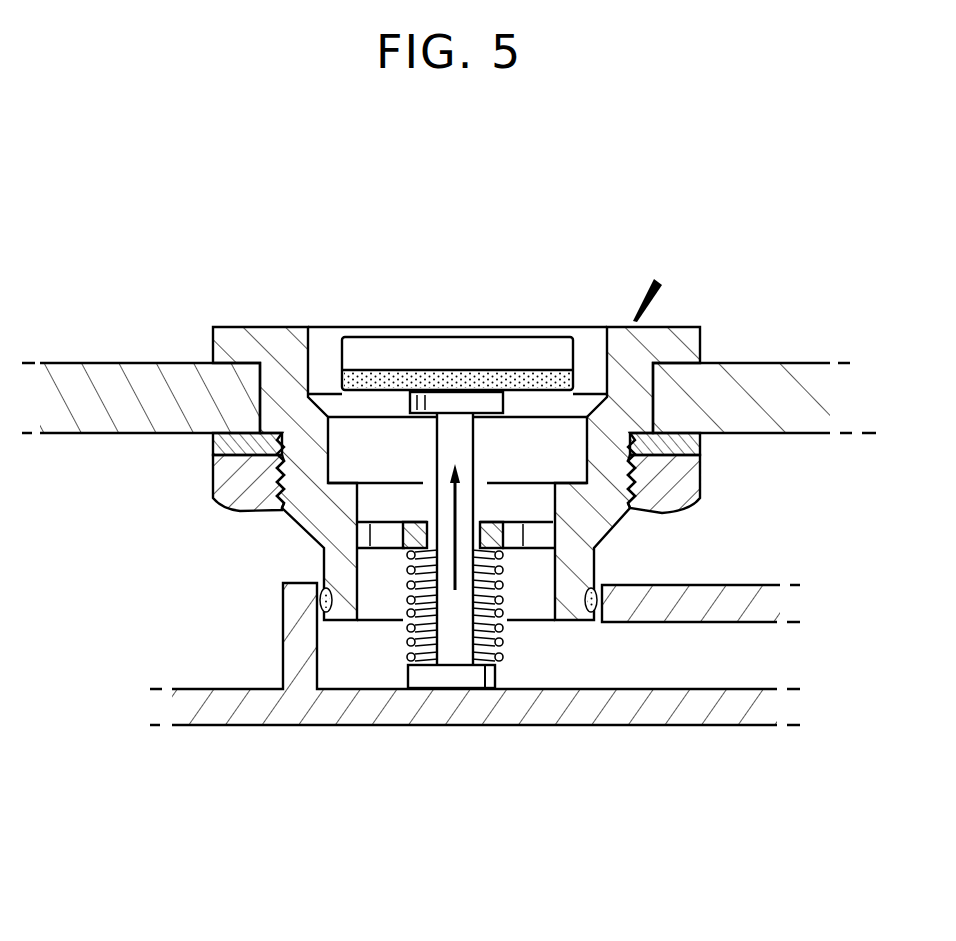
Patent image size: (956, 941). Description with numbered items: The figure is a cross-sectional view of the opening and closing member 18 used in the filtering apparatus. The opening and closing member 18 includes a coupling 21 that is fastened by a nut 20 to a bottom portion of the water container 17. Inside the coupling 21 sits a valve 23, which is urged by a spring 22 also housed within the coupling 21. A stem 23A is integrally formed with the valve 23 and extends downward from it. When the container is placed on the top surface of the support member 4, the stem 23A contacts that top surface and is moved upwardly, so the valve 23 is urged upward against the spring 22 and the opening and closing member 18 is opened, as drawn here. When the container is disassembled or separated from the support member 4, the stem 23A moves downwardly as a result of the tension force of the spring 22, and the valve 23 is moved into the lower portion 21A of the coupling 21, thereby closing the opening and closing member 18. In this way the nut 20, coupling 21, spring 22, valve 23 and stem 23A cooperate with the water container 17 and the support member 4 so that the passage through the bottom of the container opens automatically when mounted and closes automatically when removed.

The support member 4 is at (222, 706).
The water container 17 is at (788, 388).
The opening and closing member 18 is at (636, 320).
The nut 20 is at (212, 497).
The coupling 21 is at (283, 327).
The lower portion of the coupling 21A is at (333, 441).
The spring 22 is at (408, 627).
The valve 23 is at (443, 348).
The stem 23A is at (458, 443).